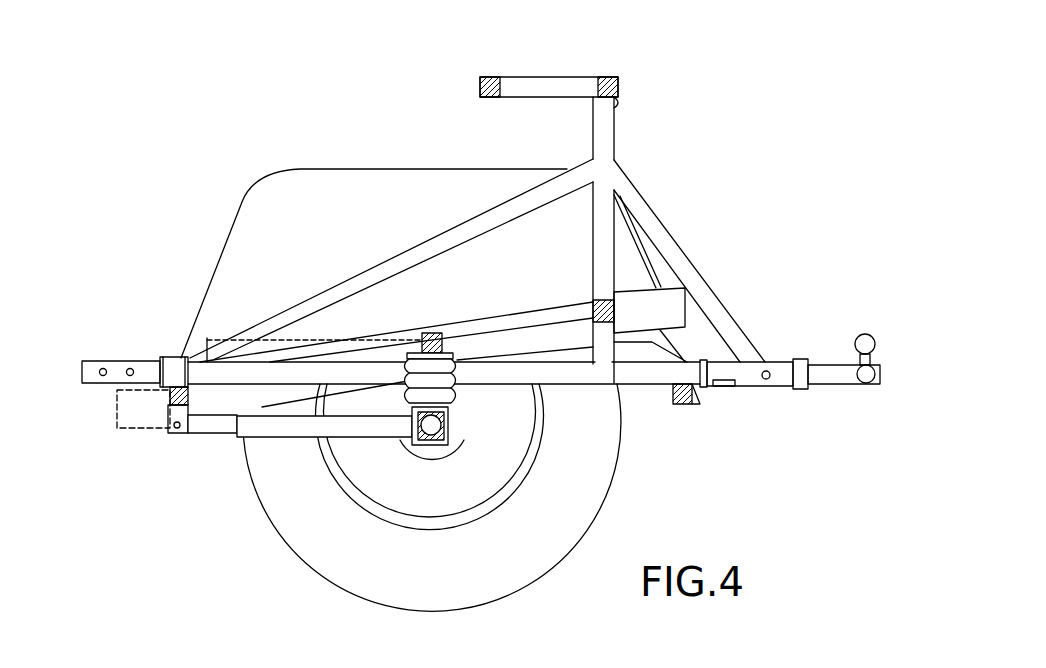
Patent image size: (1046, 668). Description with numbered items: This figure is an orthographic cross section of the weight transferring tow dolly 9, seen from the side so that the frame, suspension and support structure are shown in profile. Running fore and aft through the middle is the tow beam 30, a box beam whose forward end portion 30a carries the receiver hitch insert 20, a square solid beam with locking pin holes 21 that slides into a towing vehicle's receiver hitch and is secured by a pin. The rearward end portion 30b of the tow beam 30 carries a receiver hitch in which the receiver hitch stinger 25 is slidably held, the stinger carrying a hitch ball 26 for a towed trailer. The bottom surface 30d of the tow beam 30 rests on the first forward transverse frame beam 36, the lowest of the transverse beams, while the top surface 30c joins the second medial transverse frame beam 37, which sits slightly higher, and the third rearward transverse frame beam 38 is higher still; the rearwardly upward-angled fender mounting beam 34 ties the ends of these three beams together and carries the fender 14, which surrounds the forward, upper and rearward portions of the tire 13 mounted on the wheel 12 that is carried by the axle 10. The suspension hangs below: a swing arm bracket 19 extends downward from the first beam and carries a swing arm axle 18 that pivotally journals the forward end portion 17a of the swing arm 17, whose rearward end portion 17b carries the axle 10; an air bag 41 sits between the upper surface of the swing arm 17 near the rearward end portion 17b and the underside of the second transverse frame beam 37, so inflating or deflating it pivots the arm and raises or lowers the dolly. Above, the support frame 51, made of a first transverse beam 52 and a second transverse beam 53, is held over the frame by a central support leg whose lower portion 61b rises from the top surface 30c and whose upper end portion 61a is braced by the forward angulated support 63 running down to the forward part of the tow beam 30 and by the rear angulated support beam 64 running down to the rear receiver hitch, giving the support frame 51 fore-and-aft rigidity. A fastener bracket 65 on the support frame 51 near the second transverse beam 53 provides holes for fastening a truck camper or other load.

The weight transferring tow dolly 9 is at (280, 158).
The axle 10 is at (449, 436).
The wheel 12 is at (355, 503).
The tire 13 is at (606, 473).
The fender 14 is at (352, 182).
The swing arm 17 is at (267, 437).
The forward end portion 17a is at (198, 433).
The rearward end portion 17b is at (383, 433).
The swing arm axle 18 is at (168, 433).
The swing arm bracket 19 is at (172, 428).
The receiver hitch insert 20 is at (82, 373).
The locking pin hole 21 is at (128, 367).
The receiver hitch stinger 25 is at (838, 386).
The hitch ball 26 is at (857, 343).
The tow beam 30 is at (206, 370).
The forward end portion 30a is at (175, 357).
The rearward end portion 30b is at (779, 388).
The top surface 30c is at (627, 368).
The bottom surface 30d is at (403, 380).
The fender mounting beam 34 is at (668, 300).
The first forward transverse frame beam 36 is at (170, 418).
The second medial transverse frame beam 37 is at (434, 331).
The third rearward transverse frame beam 38 is at (594, 303).
The air bag 41 is at (460, 368).
The support frame 51 is at (620, 74).
The first transverse beam 52 is at (486, 77).
The second transverse beam 53 is at (620, 92).
The upper end portion 61a is at (597, 120).
The lower column 61b is at (602, 352).
The forward angulated support 63 is at (436, 253).
The rear angulated support beam 64 is at (647, 210).
The fastener bracket 65 is at (618, 103).